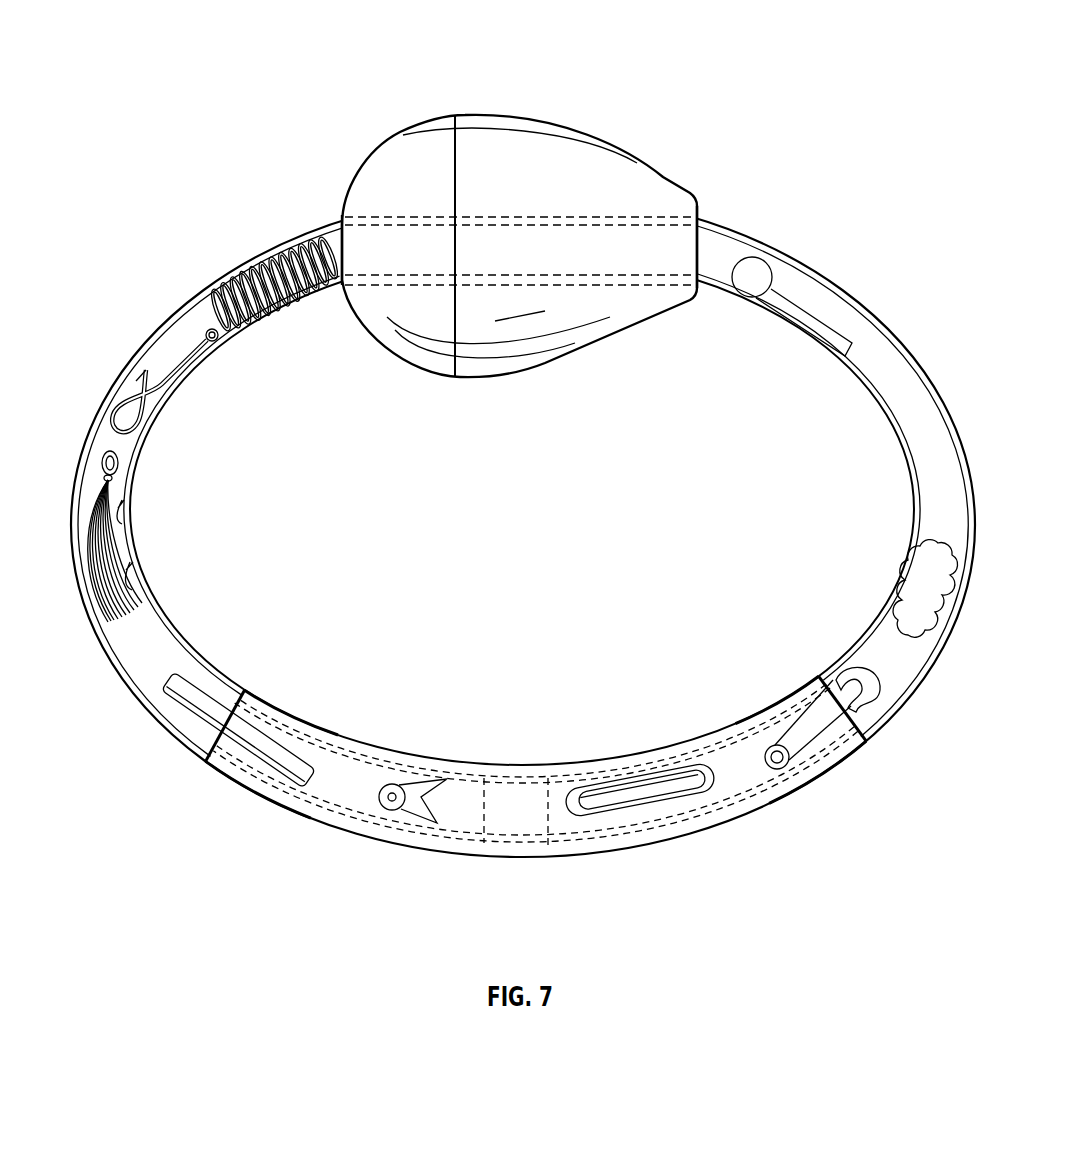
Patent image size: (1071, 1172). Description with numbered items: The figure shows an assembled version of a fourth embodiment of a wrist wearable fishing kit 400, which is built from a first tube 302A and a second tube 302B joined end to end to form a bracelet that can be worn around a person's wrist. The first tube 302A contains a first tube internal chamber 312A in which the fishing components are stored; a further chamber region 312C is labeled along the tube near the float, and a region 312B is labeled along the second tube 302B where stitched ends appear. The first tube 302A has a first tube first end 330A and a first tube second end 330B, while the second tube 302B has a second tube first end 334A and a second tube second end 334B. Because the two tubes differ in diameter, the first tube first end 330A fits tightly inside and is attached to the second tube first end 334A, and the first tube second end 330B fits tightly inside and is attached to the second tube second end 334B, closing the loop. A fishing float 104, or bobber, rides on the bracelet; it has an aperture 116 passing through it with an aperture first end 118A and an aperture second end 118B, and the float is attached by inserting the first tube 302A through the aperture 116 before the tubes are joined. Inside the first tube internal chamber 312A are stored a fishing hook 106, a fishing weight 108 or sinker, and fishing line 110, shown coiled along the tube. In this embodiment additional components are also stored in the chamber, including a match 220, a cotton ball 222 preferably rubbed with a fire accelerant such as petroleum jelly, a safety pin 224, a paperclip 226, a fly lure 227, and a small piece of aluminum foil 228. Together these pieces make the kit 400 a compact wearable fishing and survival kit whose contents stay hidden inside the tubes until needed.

The wrist wearable fishing kit 400 is at (864, 150).
The fishing float 104 is at (585, 152).
The aperture 116 is at (490, 216).
The aperture first end 118A is at (342, 218).
The aperture second end 118B is at (699, 217).
The fishing line 110 is at (300, 257).
The fishing hook 106 is at (177, 365).
The first tube 302A is at (108, 385).
The first tube internal chamber 312A is at (130, 441).
The third band surface 312C is at (725, 262).
The match 220 is at (800, 305).
The cotton ball 222 is at (912, 590).
The fly lure 227 is at (112, 548).
The second tube first end 334A is at (249, 690).
The second tube second end 334B is at (829, 690).
The small piece of aluminum foil 228 is at (268, 740).
The fishing weight 108 is at (400, 790).
The first tube first end 330A is at (485, 797).
The first tube second end 330B is at (547, 808).
The paperclip 226 is at (620, 790).
The safety pin 224 is at (800, 718).
The second tube 302B is at (352, 830).
The second band surface 312B is at (507, 818).